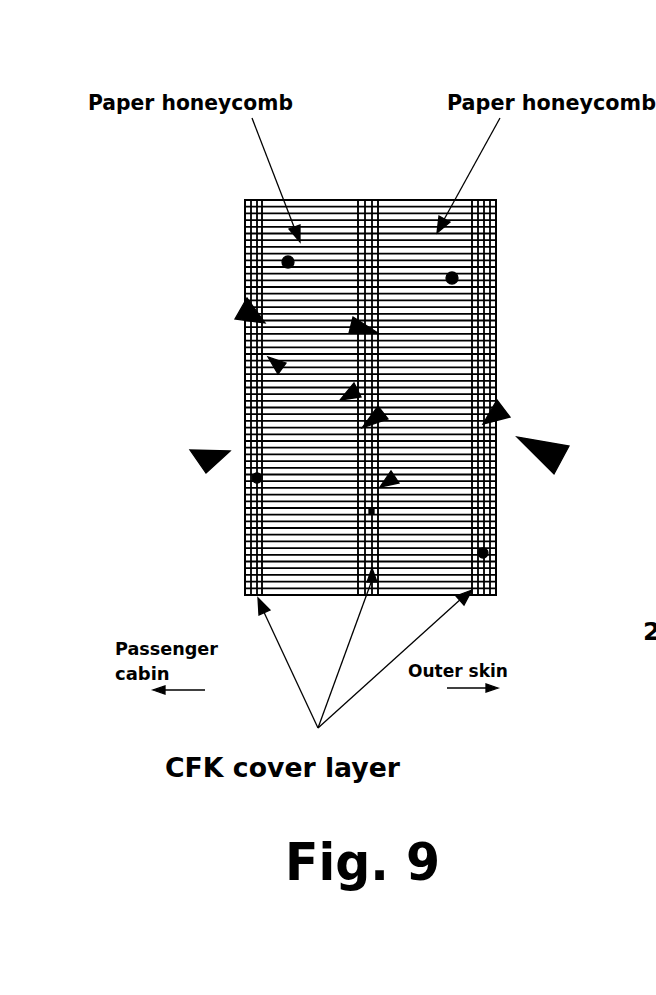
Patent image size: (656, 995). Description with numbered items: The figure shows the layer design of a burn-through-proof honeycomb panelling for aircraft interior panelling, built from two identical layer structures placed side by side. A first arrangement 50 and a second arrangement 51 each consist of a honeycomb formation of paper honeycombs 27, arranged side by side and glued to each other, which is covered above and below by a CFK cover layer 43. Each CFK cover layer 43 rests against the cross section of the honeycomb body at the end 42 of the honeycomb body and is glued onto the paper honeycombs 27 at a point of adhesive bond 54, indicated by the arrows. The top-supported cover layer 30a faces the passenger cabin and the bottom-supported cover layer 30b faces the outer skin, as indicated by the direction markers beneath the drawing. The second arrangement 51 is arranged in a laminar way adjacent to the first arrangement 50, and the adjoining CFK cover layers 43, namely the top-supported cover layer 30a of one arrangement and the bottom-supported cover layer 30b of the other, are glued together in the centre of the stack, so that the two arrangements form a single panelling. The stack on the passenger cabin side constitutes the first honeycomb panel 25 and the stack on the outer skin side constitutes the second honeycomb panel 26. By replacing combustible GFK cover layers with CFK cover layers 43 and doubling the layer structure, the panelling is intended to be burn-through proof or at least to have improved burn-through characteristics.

The second arrangement 51 is at (320, 170).
The first arrangement 50 is at (433, 170).
The cover layer, top supported 30a is at (368, 172).
The cover layer, bottom supported 30b is at (578, 548).
The paper honeycomb 27 is at (288, 262).
The point of adhesive bond 54 is at (365, 329).
The end of the honeycomb body 42 is at (410, 465).
The first honeycomb panel 25 is at (200, 461).
The second honeycomb panel 26 is at (555, 458).
The CFK cover layer 43 is at (371, 512).